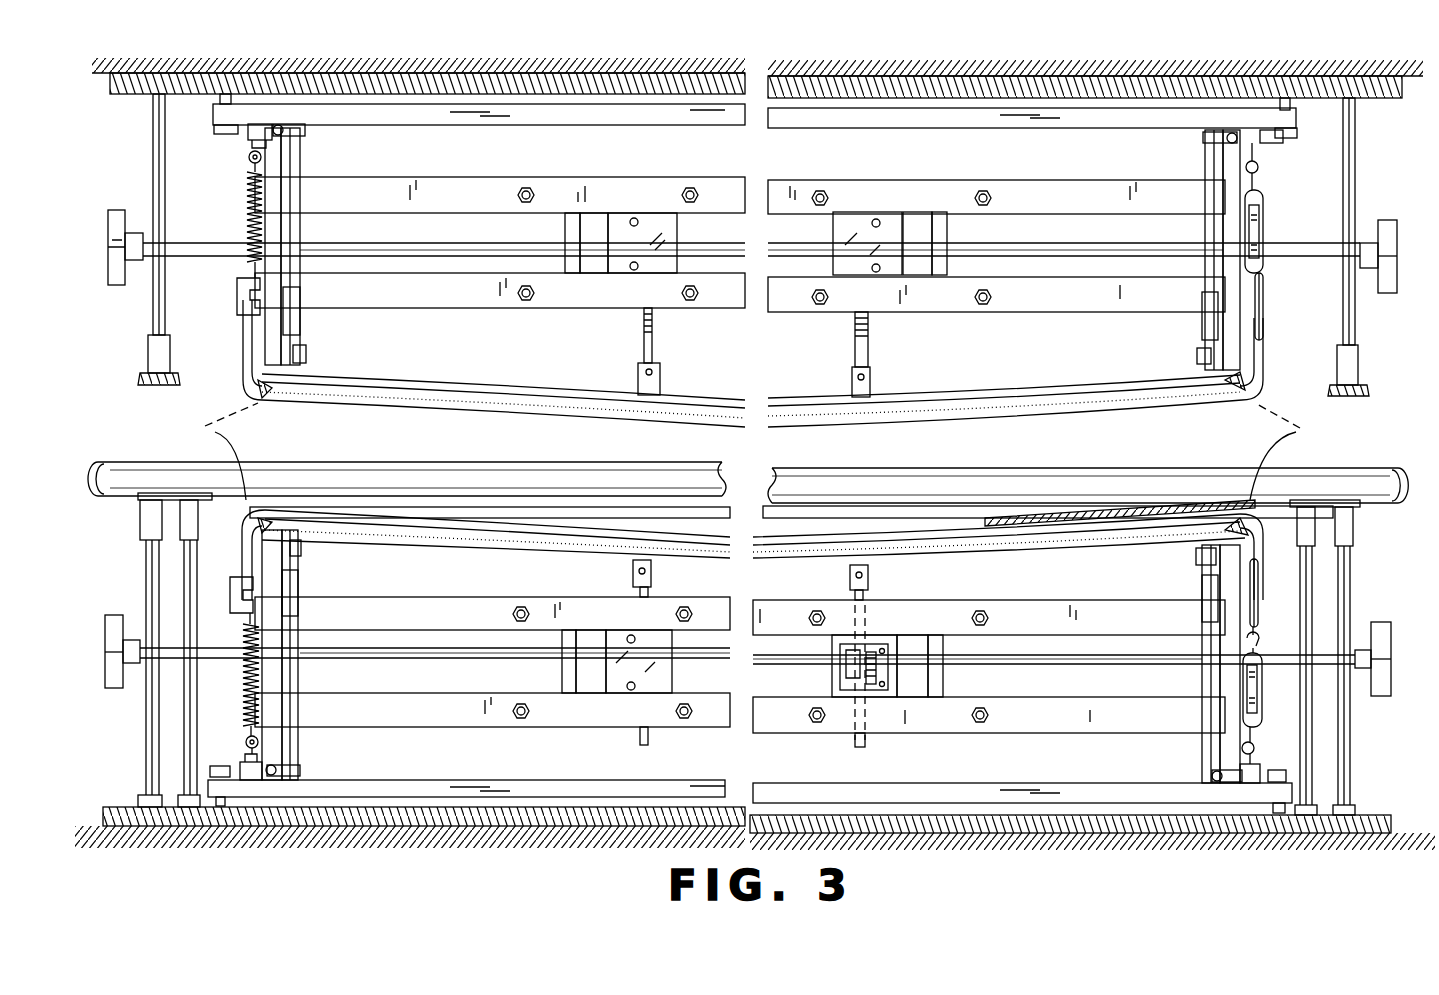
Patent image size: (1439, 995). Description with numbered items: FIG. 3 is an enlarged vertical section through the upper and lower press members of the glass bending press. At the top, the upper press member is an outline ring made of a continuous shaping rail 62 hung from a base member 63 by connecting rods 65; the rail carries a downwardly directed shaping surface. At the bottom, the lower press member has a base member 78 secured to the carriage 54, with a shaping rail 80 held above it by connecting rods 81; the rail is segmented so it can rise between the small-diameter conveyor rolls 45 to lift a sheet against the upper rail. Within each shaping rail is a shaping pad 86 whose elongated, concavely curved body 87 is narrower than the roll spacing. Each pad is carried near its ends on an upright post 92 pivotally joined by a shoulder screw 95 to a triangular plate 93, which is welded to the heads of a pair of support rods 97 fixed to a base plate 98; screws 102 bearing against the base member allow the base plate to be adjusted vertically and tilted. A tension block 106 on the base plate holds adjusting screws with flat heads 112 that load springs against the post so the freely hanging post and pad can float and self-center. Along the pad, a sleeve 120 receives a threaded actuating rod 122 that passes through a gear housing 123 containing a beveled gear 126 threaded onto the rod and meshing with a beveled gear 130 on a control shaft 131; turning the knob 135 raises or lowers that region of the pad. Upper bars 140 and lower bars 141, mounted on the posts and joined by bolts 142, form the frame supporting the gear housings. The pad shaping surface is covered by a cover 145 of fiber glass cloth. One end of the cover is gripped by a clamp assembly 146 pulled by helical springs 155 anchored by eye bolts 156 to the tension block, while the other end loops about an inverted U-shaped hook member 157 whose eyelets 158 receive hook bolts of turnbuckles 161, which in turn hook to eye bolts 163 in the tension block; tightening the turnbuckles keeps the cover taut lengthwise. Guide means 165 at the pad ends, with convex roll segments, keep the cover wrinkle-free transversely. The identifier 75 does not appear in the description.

The conveyor rolls 45 is at (415, 468).
The carriage 54 is at (1405, 838).
The shaping rail 62 is at (141, 382).
The base member 63 is at (118, 95).
The connecting rods 65 is at (155, 135).
The ceiling structure 75 is at (185, 55).
The base member 78 is at (110, 806).
The shaping rail 80 is at (1342, 476).
The connecting rods 81 is at (190, 545).
The shaping pad 86 is at (468, 376).
The body 87 is at (588, 383).
The upright post 92 is at (281, 240).
The plate 93 is at (300, 330).
The shoulder screw 95 is at (306, 355).
The support rods 97 is at (300, 188).
The base plate 98 is at (790, 118).
The screws 102 is at (228, 92).
The block 106 is at (255, 130).
The flat head 112 is at (305, 130).
The sleeve 120 is at (660, 380).
The actuating rod 122 is at (856, 337).
The gear housing 123 is at (820, 262).
The beveled gear 126 is at (840, 671).
The beveled gear 130 is at (878, 692).
The control shaft 131 is at (435, 250).
The knob 135 is at (110, 270).
The upper bars 140 is at (935, 300).
The lower bars 141 is at (600, 185).
The bolts 142 is at (685, 293).
The cover 145 is at (997, 433).
The clamp assembly 146 is at (236, 297).
The helical springs 155 is at (249, 200).
The eye bolts 156 is at (262, 157).
The hook member 157 is at (1265, 318).
The eyelets 158 is at (1245, 614).
The turnbuckles 161 is at (1266, 226).
The eye bolts 163 is at (1258, 170).
The guide means 165 is at (754, 451).